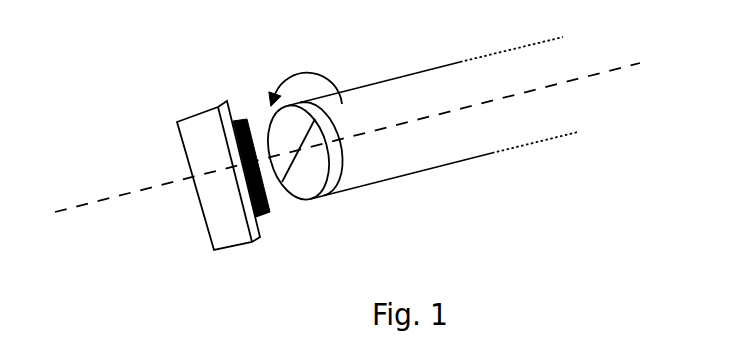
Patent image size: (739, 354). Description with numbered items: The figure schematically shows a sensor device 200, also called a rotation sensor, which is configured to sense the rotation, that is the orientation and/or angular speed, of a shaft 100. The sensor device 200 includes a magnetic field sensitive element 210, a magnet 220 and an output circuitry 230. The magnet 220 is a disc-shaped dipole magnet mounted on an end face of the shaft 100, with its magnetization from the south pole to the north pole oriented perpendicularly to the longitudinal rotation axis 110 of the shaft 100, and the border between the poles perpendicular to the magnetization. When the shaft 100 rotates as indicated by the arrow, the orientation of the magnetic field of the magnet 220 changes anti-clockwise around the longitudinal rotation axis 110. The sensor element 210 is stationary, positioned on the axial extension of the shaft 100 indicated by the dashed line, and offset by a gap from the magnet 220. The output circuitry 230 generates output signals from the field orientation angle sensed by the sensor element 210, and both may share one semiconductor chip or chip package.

The shaft 100 is at (413, 70).
The longitudinal rotation axis 110 is at (620, 67).
The sensor device 200 is at (238, 70).
The magnetic field sensitive element 210 is at (261, 218).
The magnet 220 is at (309, 199).
The output circuitry 230 is at (208, 214).